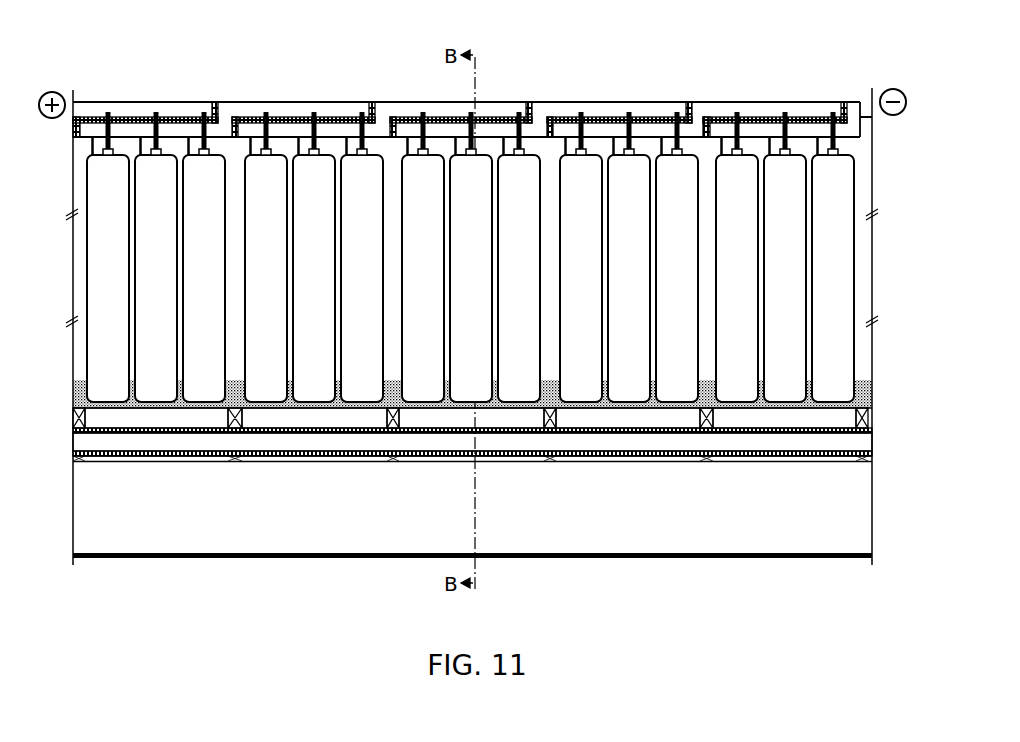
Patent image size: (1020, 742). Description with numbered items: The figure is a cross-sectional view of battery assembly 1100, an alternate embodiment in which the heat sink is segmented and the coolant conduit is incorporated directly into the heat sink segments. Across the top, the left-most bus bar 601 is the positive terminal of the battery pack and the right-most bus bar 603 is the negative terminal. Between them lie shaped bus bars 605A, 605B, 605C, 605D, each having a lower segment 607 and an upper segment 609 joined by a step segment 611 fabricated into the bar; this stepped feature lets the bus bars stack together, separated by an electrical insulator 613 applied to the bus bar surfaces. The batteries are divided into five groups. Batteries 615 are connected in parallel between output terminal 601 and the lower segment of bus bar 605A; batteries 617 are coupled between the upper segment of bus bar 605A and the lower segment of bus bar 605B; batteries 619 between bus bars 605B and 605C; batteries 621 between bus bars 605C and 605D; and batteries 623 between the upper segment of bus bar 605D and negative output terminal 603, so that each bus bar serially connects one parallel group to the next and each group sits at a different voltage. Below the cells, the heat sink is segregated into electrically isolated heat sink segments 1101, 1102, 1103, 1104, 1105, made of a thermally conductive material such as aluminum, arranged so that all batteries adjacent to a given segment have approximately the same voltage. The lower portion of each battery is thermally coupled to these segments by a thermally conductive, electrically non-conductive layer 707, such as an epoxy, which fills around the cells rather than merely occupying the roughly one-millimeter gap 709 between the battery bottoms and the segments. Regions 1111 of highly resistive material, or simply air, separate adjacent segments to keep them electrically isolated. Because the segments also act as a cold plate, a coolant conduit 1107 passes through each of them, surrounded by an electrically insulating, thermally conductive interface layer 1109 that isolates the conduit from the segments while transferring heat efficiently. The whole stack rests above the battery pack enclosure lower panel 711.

The battery assembly 1100 is at (670, 55).
The bus bar 601 is at (128, 101).
The bus bar 603 is at (858, 102).
The shaped bus bar 605A is at (247, 110).
The shaped bus bar 605B is at (508, 106).
The shaped bus bar 605C is at (650, 104).
The shaped bus bar 605D is at (770, 104).
The lower segment 607 is at (372, 128).
The upper segment 609 is at (493, 105).
The step segment 611 is at (390, 117).
The electrical insulator 613 is at (213, 104).
The batteries 615 is at (222, 237).
The batteries 617 is at (380, 237).
The batteries 619 is at (537, 237).
The batteries 621 is at (695, 237).
The batteries 623 is at (851, 237).
The thermally conductive layer 707 is at (858, 406).
The gap 709 is at (858, 406).
The battery pack enclosure lower panel 711 is at (610, 558).
The heat sink segment 1101 is at (187, 425).
The heat sink segment 1102 is at (349, 422).
The heat sink segment 1103 is at (413, 422).
The heat sink segment 1104 is at (660, 422).
The heat sink segment 1105 is at (757, 422).
The coolant conduit 1107 is at (543, 443).
The interface layer 1109 is at (490, 460).
The regions 1111 is at (232, 428).